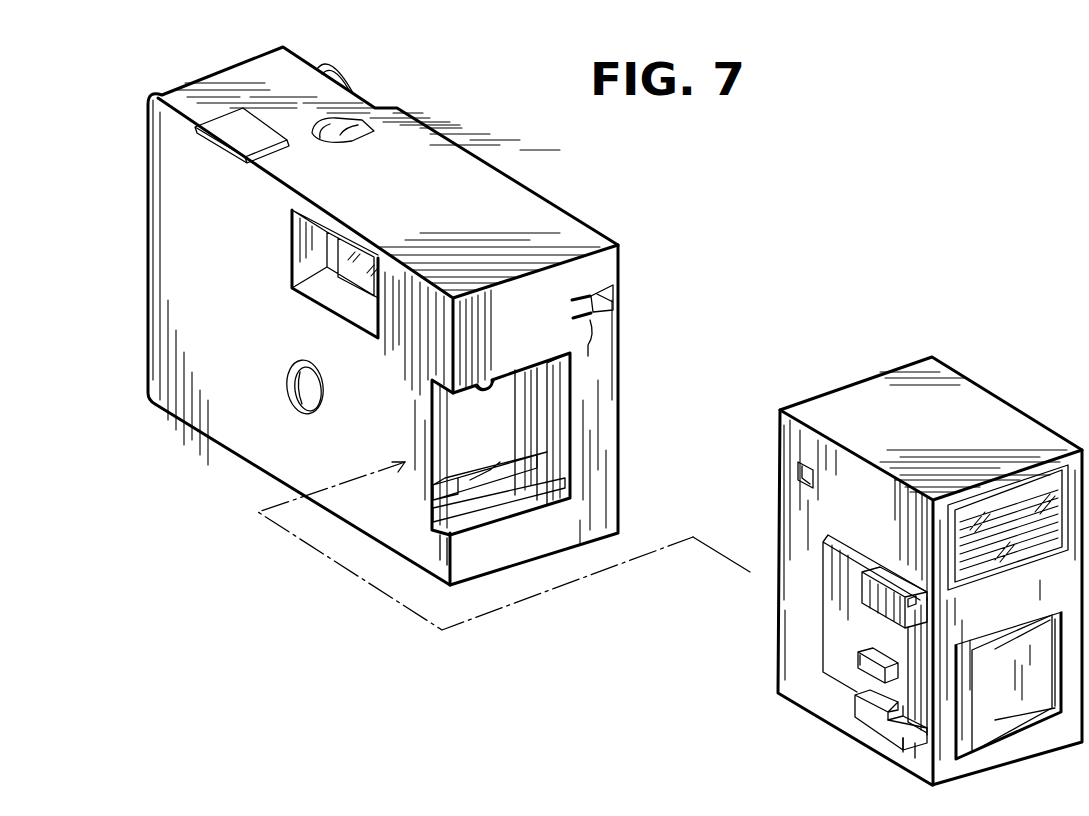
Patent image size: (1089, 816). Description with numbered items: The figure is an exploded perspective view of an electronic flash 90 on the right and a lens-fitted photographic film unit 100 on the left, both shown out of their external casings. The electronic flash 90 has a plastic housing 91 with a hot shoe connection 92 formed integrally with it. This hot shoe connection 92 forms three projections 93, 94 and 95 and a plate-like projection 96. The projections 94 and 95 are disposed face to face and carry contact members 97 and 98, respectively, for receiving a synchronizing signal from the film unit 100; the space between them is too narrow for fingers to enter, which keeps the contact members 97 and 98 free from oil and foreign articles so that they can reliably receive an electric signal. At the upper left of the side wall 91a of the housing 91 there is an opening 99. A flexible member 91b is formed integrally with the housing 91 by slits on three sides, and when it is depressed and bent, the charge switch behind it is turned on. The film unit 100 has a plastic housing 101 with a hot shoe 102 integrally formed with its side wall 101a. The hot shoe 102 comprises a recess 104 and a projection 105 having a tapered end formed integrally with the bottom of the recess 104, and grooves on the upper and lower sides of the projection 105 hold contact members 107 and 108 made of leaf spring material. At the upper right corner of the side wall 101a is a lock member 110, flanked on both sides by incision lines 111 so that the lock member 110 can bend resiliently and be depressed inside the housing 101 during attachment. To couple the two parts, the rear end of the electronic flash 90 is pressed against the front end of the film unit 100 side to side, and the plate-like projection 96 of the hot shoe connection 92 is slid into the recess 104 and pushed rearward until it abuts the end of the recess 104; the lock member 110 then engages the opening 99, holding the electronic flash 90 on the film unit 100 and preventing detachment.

The electronic flash 90 is at (970, 382).
The plastic housing 91 is at (1023, 428).
The side wall 91a is at (866, 478).
The flexible member 91b is at (1022, 677).
The hot shoe connection 92 is at (858, 742).
The projection 93 is at (875, 572).
The projection 94 is at (886, 660).
The projection 95 is at (867, 718).
The plate-like projection 96 is at (845, 610).
The contact member 97 is at (862, 676).
The contact member 98 is at (868, 686).
The opening 99 is at (805, 458).
The lens-fitted photographic film unit 100 is at (530, 190).
The plastic housing 101 is at (594, 224).
The side wall 101a is at (612, 403).
The hot shoe 102 is at (432, 431).
The recess 104 is at (482, 384).
The projection 105 is at (430, 518).
The contact member 107 is at (497, 465).
The contact member 108 is at (497, 490).
The lock member 110 is at (614, 302).
The incision lines 111 is at (592, 351).